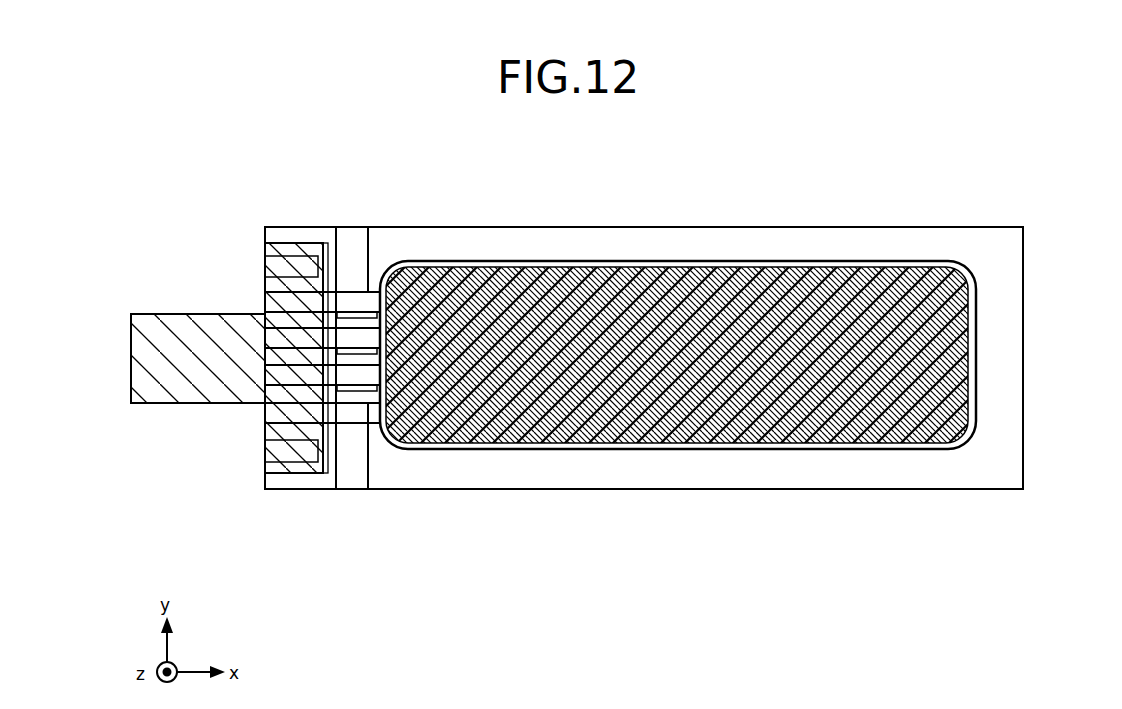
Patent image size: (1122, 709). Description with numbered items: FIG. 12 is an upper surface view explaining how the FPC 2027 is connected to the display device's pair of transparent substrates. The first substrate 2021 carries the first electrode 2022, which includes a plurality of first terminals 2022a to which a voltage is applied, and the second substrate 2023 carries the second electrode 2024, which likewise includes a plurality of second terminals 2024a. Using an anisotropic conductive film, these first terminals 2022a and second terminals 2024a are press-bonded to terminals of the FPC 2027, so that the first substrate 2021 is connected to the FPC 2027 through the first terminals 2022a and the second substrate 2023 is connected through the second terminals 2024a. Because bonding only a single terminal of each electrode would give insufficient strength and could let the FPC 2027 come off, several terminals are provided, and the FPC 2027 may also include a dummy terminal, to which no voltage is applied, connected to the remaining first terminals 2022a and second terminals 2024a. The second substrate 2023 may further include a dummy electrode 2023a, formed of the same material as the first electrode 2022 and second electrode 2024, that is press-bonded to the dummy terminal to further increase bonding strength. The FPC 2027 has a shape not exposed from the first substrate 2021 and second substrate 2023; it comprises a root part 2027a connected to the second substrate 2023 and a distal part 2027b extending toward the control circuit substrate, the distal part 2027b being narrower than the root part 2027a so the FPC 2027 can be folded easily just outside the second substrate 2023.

The first substrate 2021 is at (277, 492).
The first electrode 2022 is at (975, 490).
The first terminal 2022a is at (367, 290).
The second substrate 2023 is at (487, 490).
The dummy electrode 2023a is at (265, 257).
The second electrode 2024 is at (880, 450).
The second terminal 2024a is at (365, 403).
The FPC 2027 is at (210, 180).
The root part 2027a is at (282, 243).
The distal part 2027b is at (131, 318).